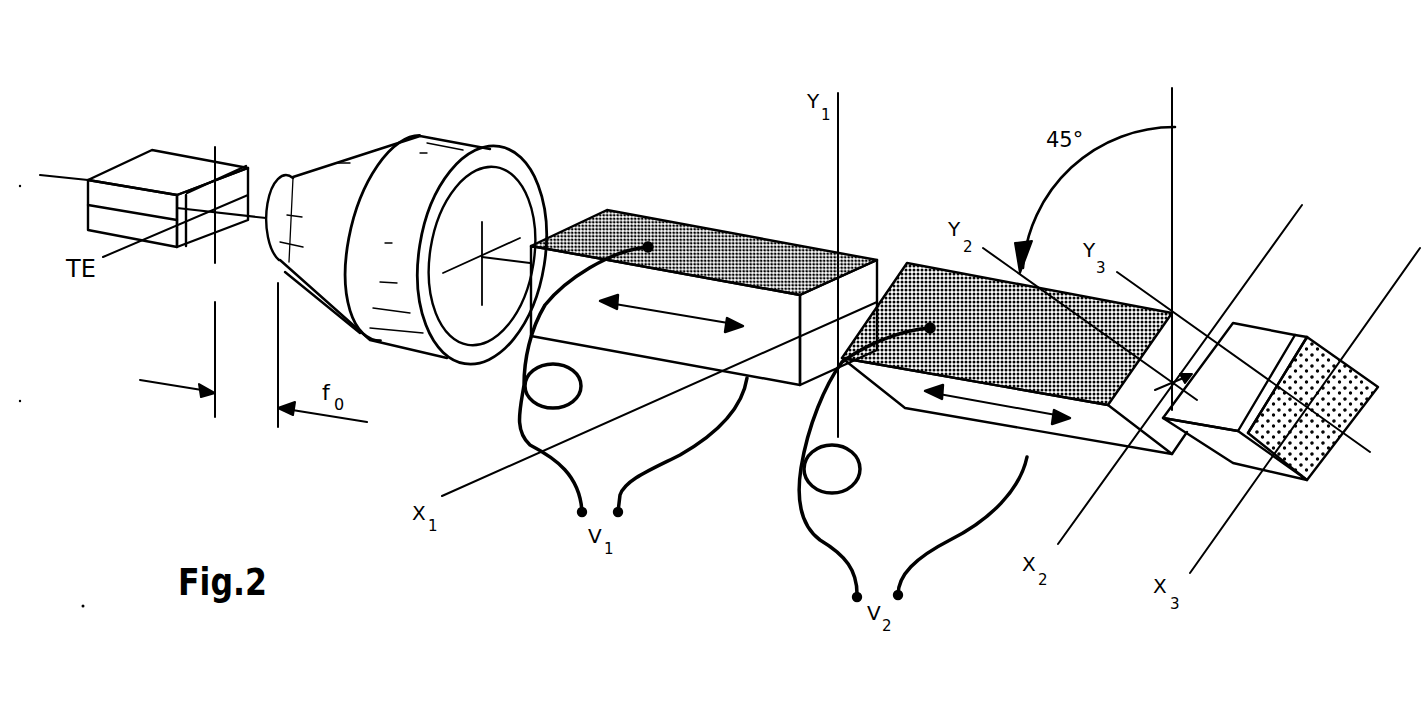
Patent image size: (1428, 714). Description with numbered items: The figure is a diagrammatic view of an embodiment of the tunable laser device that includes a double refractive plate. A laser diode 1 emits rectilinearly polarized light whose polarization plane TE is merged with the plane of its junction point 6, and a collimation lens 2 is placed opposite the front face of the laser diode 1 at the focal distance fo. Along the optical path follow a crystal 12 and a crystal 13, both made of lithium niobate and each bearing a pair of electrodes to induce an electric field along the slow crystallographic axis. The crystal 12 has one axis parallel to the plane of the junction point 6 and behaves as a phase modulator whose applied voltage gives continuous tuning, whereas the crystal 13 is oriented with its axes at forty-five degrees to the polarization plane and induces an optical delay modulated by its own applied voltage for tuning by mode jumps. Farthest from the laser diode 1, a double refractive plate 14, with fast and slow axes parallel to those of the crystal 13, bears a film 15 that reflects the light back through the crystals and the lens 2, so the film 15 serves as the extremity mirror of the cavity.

The laser diode 1 is at (167, 163).
The collimation lens 2 is at (328, 175).
The junction point 6 is at (200, 218).
The crystal 12 is at (558, 262).
The crystal 13 is at (922, 293).
The double refractive plate 14 is at (1257, 340).
The film 15 is at (1343, 393).